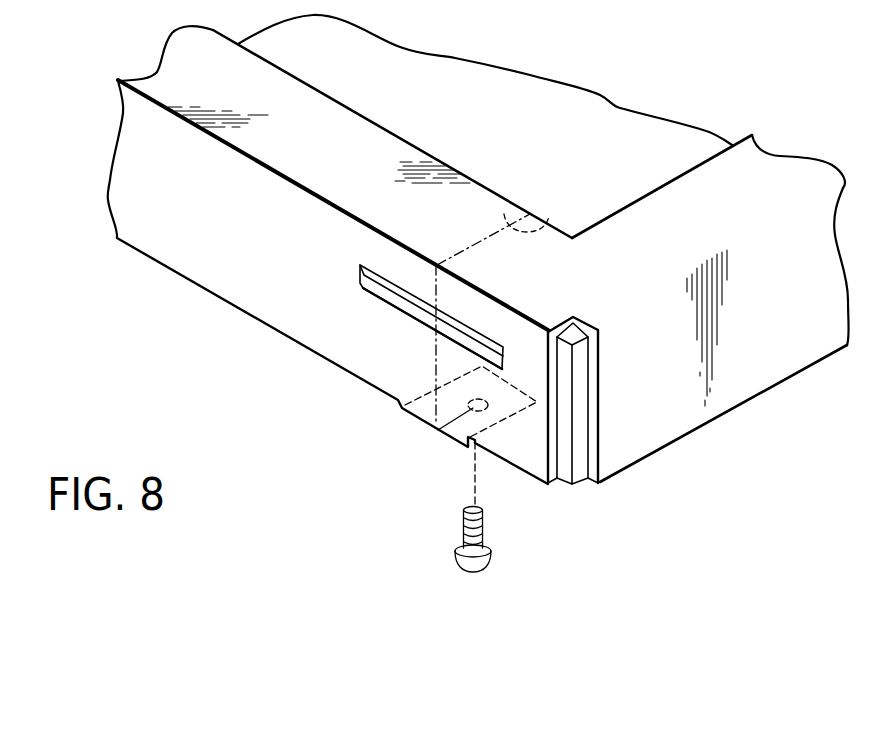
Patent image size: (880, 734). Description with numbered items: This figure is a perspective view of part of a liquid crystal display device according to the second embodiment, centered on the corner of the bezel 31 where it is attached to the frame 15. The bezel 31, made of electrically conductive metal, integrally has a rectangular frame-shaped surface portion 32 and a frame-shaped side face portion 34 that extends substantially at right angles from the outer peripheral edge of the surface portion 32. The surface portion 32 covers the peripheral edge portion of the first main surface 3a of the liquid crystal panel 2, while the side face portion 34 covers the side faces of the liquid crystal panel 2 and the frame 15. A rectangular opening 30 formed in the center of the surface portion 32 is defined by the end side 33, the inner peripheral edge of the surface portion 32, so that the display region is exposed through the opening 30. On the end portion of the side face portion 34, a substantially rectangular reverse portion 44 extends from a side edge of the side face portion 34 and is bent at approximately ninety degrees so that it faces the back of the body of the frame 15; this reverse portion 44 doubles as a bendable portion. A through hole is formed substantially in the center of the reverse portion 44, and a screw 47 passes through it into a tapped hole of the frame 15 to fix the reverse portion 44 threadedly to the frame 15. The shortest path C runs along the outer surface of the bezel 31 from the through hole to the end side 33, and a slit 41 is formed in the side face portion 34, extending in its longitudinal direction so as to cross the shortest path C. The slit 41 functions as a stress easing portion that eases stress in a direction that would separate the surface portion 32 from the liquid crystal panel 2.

The liquid crystal panel 2 is at (455, 62).
The first main surface 3a is at (527, 85).
The opening 30 is at (667, 128).
The bezel 31 is at (476, 167).
The surface portion 32 is at (303, 95).
The end side 33 is at (413, 137).
The side face portion 34 is at (133, 235).
The slit 41 is at (402, 302).
The reverse portion 44 is at (508, 405).
The screw 47 is at (489, 559).
The frame 15 is at (575, 485).
The shortest path C is at (527, 216).